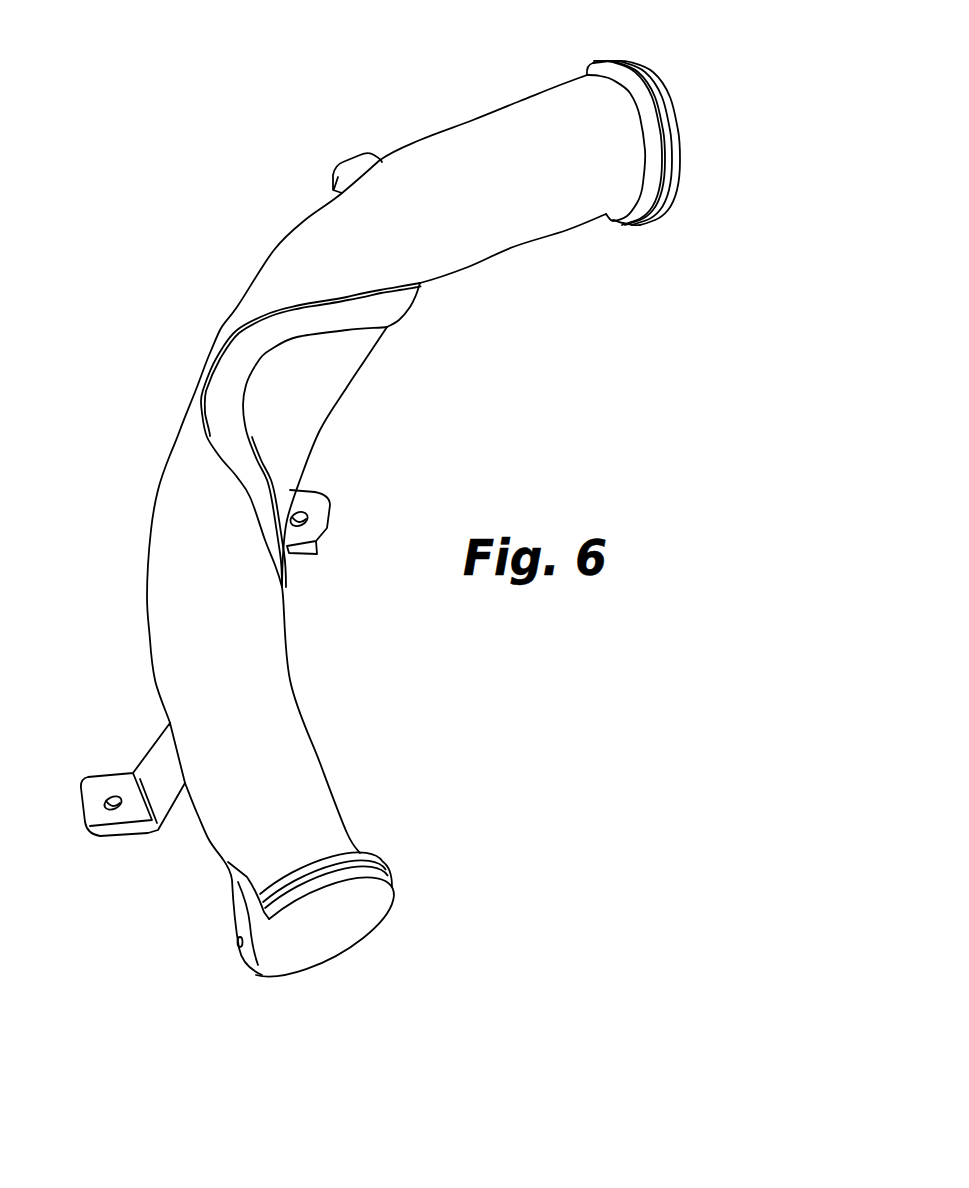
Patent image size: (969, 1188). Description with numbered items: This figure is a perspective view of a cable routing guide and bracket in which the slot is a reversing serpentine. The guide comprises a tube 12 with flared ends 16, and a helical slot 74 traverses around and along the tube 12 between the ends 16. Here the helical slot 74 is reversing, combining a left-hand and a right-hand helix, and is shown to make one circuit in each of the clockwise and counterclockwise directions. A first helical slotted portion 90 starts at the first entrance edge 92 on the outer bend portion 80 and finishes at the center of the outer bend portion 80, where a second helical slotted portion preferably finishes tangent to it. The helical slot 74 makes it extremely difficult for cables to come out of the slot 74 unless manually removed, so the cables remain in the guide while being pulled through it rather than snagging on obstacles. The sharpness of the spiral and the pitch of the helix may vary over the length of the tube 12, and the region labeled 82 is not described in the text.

The tube 12 is at (424, 506).
The flared ends 16 is at (323, 932).
The reversing helical slot 74 is at (237, 368).
The outer bend portion 80 is at (202, 508).
The upper pipe section 82 is at (507, 248).
The first helical slotted portion 90 is at (585, 70).
The first entrance edge 92 is at (672, 123).